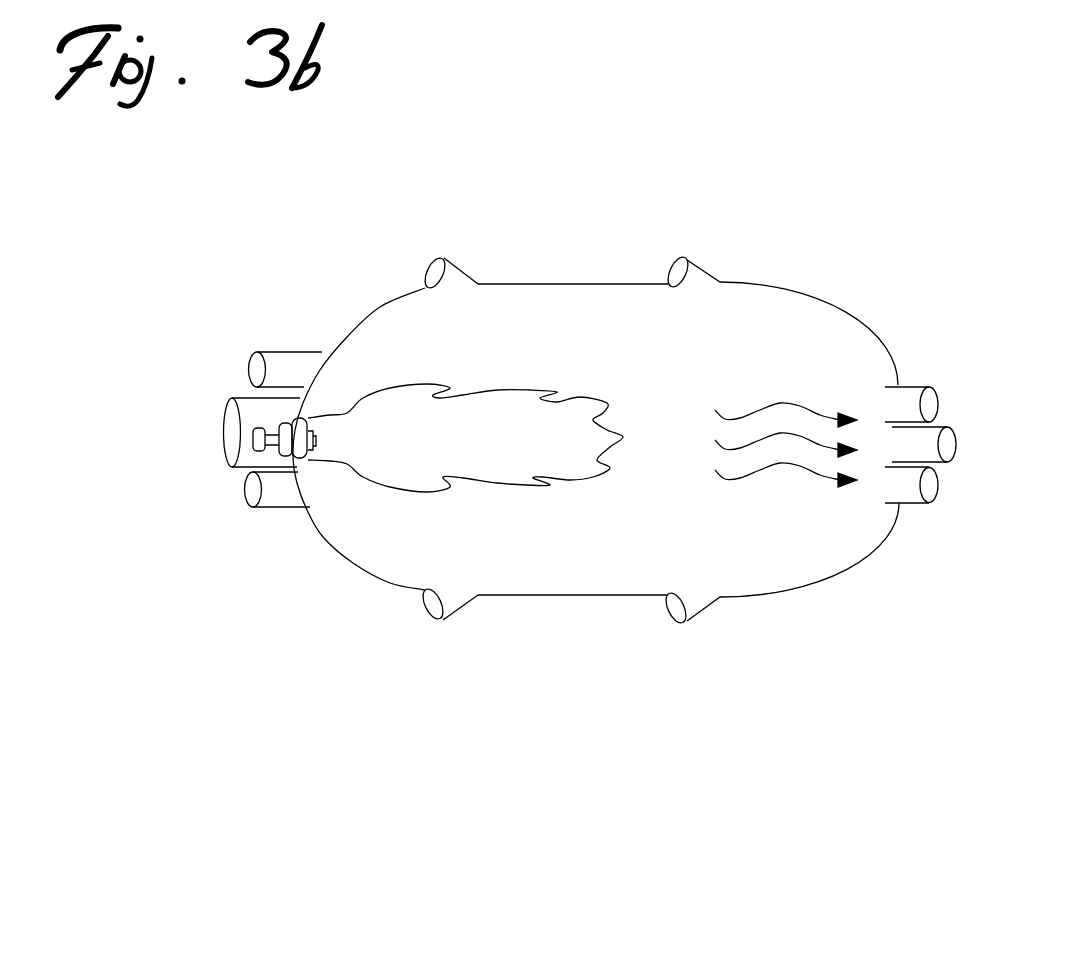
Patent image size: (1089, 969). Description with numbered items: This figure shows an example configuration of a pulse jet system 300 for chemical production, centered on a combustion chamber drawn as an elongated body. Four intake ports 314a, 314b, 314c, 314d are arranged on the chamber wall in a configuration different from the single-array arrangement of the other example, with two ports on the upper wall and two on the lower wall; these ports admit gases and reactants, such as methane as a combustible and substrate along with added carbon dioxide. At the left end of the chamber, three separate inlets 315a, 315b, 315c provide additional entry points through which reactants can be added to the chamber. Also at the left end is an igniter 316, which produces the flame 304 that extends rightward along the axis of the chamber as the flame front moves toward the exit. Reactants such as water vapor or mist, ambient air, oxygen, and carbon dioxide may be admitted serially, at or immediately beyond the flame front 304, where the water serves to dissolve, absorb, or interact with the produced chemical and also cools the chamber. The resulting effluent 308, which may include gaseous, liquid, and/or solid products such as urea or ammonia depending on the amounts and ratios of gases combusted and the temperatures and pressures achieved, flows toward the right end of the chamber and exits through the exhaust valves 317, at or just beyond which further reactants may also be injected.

The pulse jet system 300 is at (907, 264).
The flame 304 is at (613, 432).
The effluent 308 is at (737, 448).
The intake port 314a is at (427, 274).
The intake port 314b is at (670, 263).
The intake port 314c is at (428, 614).
The intake port 314d is at (677, 622).
The separate inlet 315a is at (225, 433).
The separate inlet 315b is at (247, 363).
The separate inlet 315c is at (245, 501).
The igniter 316 is at (307, 417).
The exhaust valve 317 is at (984, 430).